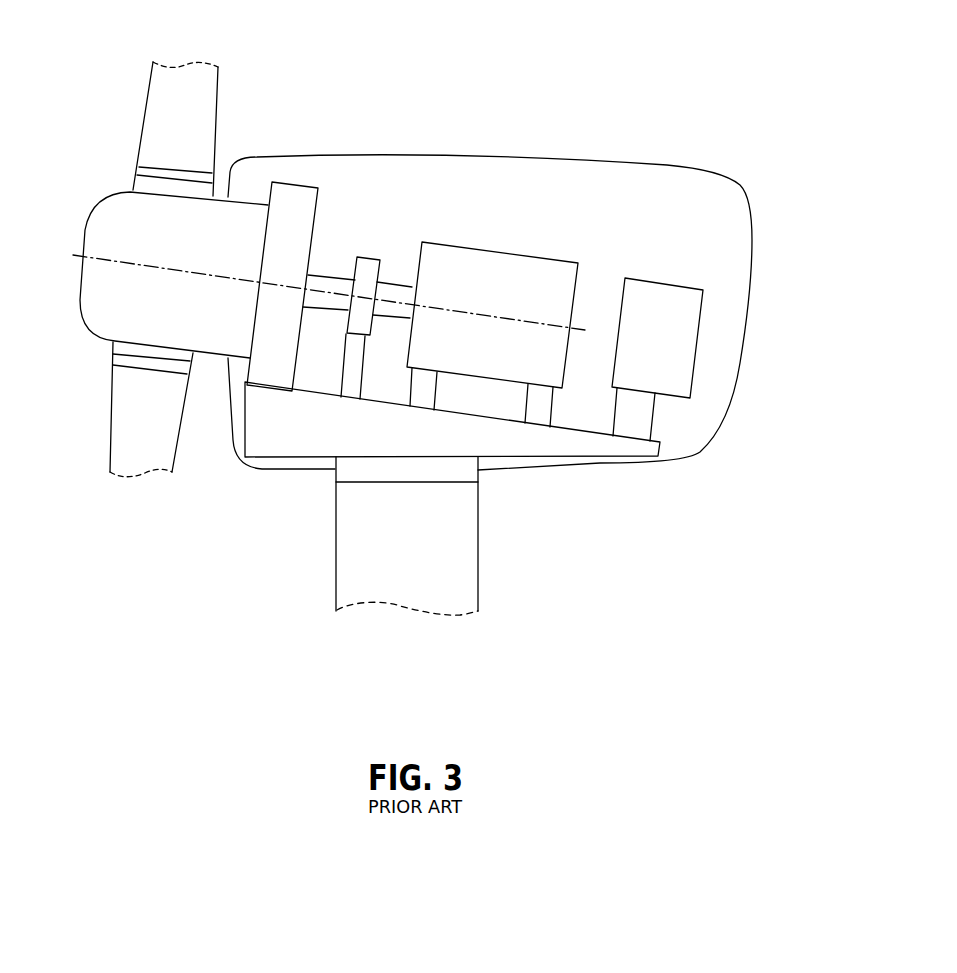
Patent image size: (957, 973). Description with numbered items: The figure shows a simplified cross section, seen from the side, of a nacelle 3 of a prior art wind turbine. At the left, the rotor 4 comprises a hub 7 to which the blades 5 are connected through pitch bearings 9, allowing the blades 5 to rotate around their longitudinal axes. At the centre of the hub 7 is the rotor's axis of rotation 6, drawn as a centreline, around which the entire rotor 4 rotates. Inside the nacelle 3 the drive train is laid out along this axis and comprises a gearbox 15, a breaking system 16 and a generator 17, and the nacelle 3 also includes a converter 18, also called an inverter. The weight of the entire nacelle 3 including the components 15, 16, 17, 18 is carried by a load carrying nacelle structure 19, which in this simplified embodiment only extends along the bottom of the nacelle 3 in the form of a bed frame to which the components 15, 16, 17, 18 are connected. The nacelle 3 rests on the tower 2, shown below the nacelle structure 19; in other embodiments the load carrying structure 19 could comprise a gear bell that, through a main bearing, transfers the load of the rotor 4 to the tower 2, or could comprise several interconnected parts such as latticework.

The tower 2 is at (457, 585).
The nacelle 3 is at (777, 174).
The rotor 4 is at (83, 352).
The blade 5 is at (192, 125).
The axis of rotation 6 is at (66, 251).
The hub 7 is at (142, 250).
The pitch bearing 9 is at (135, 363).
The gearbox 15 is at (293, 207).
The breaking system 16 is at (370, 272).
The generator 17 is at (468, 281).
The converter 18 is at (668, 315).
The nacelle structure 19 is at (540, 440).